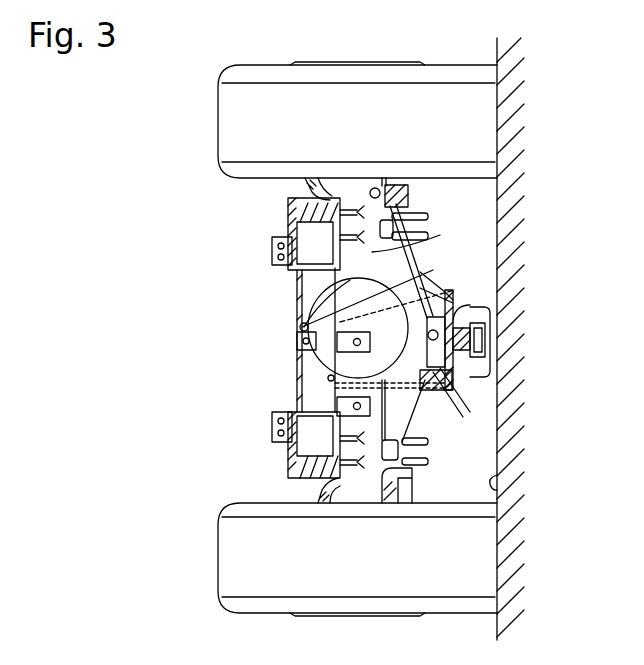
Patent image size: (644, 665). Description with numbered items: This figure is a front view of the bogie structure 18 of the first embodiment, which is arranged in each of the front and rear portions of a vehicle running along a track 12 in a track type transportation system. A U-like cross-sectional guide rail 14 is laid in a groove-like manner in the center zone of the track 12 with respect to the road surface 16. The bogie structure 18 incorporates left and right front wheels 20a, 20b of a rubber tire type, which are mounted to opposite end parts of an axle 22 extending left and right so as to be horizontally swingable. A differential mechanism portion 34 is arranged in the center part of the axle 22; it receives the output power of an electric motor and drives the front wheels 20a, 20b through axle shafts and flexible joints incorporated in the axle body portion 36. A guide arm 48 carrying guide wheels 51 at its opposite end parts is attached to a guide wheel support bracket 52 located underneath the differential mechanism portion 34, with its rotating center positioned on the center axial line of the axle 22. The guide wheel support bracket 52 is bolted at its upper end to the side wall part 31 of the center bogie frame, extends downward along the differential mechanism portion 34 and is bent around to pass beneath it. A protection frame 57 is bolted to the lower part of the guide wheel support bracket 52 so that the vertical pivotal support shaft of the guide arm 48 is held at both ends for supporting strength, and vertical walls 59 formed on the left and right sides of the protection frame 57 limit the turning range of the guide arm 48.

The track 12 is at (531, 78).
The guide rail 14 is at (508, 352).
The road surface 16 is at (497, 482).
The bogie structure 18 is at (247, 450).
The front left wheel 20a is at (232, 96).
The front right wheel 20b is at (243, 580).
The axle 22 is at (297, 272).
The side wall part 31 is at (297, 377).
The differential mechanism portion 34 is at (400, 272).
The axle body portion 36 is at (412, 221).
The guide arm 48 is at (488, 297).
The guide wheel 51 is at (486, 335).
The guide wheel support bracket 52 is at (450, 376).
The protection frame 57 is at (440, 400).
The vertical wall 59 is at (462, 300).